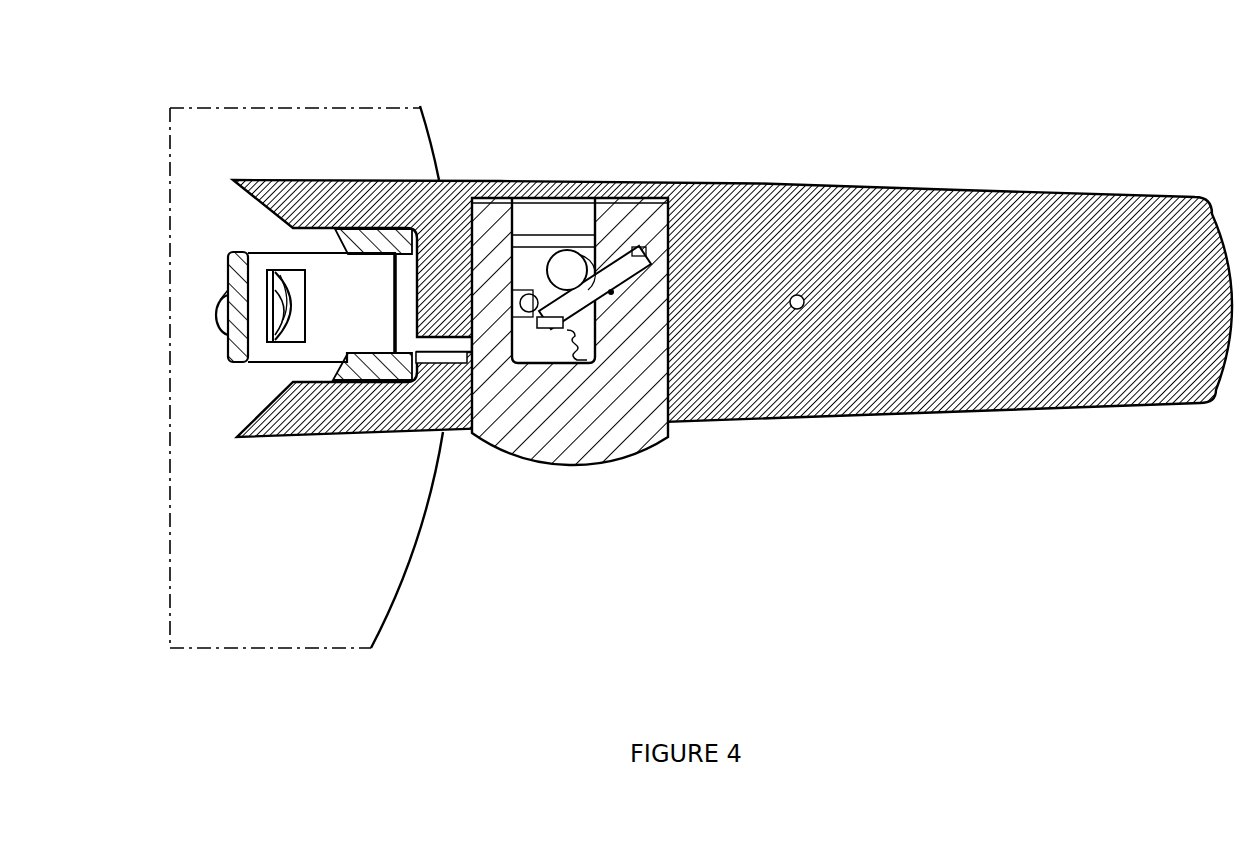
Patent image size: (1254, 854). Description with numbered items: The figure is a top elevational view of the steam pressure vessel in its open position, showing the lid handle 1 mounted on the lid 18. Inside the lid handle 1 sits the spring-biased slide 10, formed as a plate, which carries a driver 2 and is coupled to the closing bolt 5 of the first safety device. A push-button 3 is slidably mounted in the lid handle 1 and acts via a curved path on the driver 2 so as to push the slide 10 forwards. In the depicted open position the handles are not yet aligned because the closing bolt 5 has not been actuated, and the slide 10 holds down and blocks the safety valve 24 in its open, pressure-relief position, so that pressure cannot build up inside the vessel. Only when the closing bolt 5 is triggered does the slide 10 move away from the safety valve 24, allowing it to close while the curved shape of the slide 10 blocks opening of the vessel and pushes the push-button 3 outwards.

The lid handle 1 is at (977, 411).
The driver on the slide 2 is at (668, 268).
The push-button 3 is at (653, 322).
The closing bolt 5 is at (567, 253).
The slide 10 is at (288, 272).
The lid 18 is at (402, 590).
The safety valve 24 is at (212, 323).